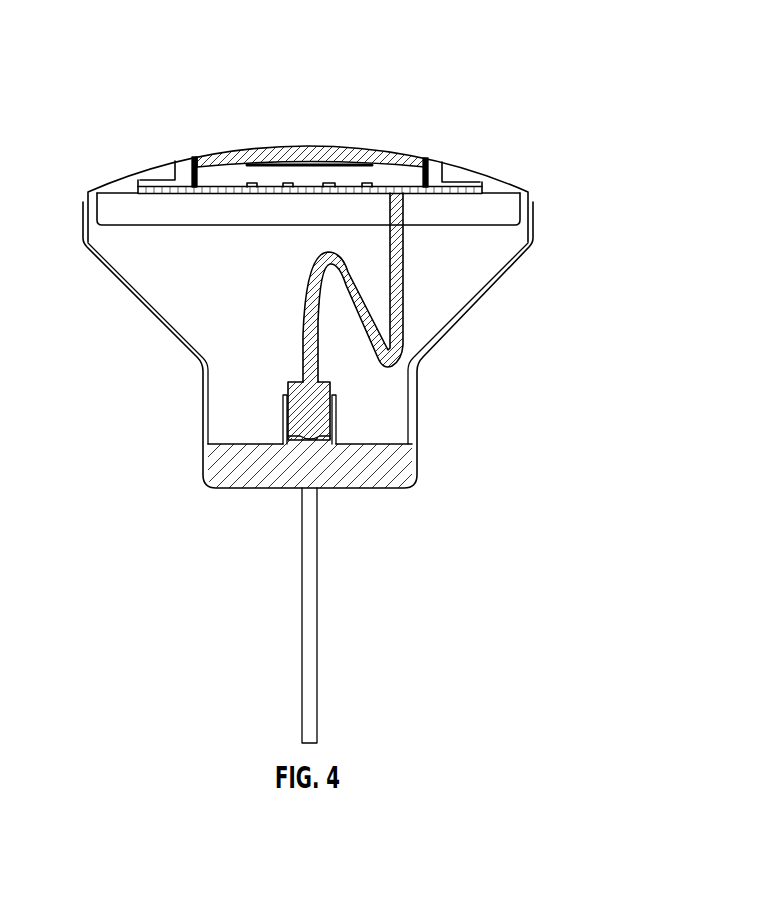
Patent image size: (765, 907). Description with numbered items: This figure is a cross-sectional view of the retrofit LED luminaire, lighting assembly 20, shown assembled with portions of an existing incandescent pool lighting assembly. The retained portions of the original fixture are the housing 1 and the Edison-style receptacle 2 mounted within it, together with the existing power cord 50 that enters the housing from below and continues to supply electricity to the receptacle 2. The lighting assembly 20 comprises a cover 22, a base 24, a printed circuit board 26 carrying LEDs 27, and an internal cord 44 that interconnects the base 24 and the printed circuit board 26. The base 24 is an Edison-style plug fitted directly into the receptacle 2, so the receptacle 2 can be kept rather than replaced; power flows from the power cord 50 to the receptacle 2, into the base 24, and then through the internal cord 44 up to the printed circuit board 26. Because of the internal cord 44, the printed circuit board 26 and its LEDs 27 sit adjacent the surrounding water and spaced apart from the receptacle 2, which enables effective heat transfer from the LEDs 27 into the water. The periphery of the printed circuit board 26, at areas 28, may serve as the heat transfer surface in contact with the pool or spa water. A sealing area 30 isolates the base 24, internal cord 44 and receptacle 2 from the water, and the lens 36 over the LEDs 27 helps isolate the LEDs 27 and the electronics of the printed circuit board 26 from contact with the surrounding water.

The lighting assembly 20 is at (380, 57).
The housing 1 is at (203, 420).
The receptacle 2 is at (336, 438).
The cover 22 is at (503, 178).
The base 24 is at (328, 389).
The printed circuit board 26 is at (168, 194).
The LEDs 27 is at (368, 184).
The areas 28 is at (151, 180).
The sealing area 30 is at (72, 194).
The lens 36 is at (277, 145).
The internal cord 44 is at (403, 275).
The power cord 50 is at (317, 642).